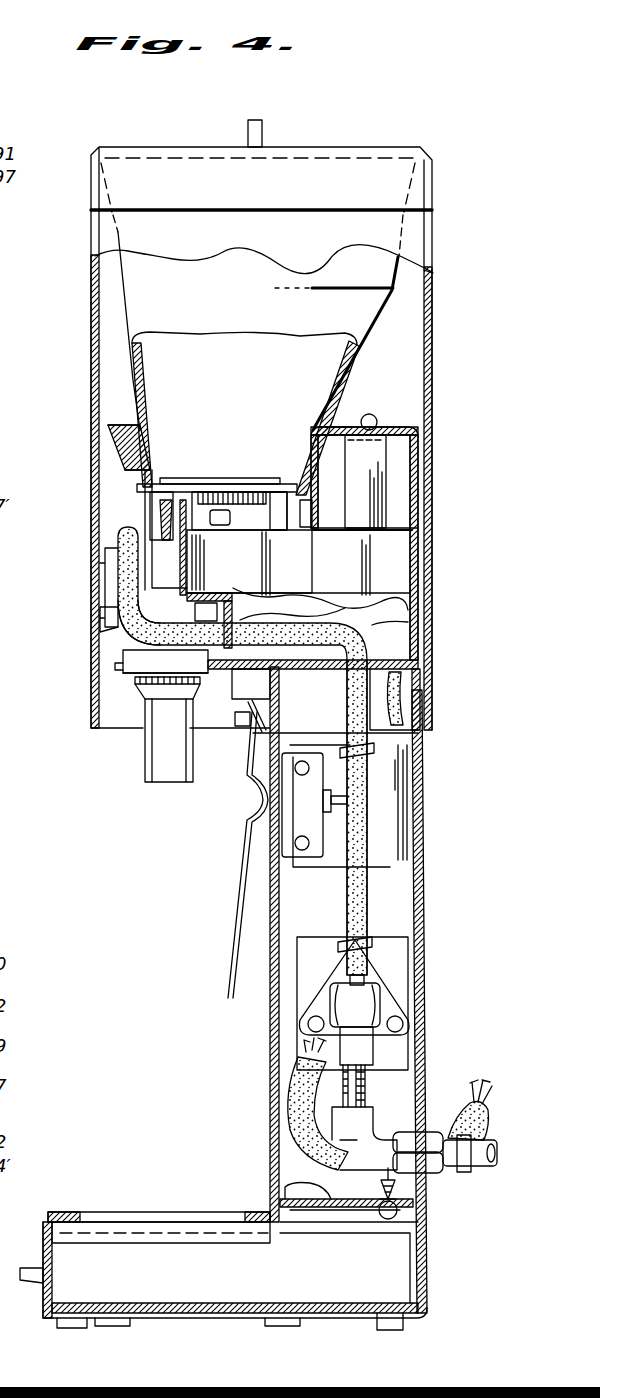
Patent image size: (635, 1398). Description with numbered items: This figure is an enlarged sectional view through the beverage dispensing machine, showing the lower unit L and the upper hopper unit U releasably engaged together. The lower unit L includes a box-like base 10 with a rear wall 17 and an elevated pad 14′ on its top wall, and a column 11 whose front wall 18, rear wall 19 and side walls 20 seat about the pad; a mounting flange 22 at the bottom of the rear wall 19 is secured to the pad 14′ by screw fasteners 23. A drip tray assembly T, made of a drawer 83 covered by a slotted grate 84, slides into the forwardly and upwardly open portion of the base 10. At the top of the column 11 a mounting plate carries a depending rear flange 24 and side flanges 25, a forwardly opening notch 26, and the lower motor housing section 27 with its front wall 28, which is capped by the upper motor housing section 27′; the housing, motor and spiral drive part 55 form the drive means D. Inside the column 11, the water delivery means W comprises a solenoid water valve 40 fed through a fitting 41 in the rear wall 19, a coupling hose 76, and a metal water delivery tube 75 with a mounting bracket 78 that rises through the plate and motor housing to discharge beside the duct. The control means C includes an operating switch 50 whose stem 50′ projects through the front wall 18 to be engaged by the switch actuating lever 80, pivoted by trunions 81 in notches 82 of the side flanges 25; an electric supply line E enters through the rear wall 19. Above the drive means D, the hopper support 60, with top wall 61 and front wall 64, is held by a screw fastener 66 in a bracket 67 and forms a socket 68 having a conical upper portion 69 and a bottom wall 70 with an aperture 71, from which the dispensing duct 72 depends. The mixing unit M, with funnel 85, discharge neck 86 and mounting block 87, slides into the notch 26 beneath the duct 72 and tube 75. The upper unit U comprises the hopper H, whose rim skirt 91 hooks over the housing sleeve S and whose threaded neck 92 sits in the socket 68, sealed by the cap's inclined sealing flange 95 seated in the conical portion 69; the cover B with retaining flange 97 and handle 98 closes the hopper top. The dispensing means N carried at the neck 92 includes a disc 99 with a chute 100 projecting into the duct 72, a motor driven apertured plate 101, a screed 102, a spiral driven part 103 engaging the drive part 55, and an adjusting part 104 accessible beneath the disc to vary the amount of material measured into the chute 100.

The base section 10 is at (290, 1322).
The column 11 is at (430, 937).
The pad 14′ is at (276, 1182).
The rear wall 17 is at (425, 1248).
The front wall 18 is at (282, 1060).
The rear wall 19 is at (426, 873).
The side walls 20 is at (298, 913).
The mounting flange 22 is at (402, 1178).
The screw fasteners 23 is at (385, 1222).
The rear flange 24 is at (426, 697).
The side flanges 25 is at (238, 718).
The notch 26 is at (416, 487).
The lower motor housing section 27 is at (392, 612).
The upper motor housing section 27′ is at (380, 556).
The front wall 28 is at (265, 600).
The solenoid operated water valve 40 is at (380, 1000).
The water conducting fitting 41 is at (377, 1112).
The operating switch 50 is at (298, 822).
The operating stem 50′ is at (275, 820).
The drive part 55 is at (235, 530).
The hopper support 60 is at (416, 450).
The top wall 61 is at (402, 430).
The front wall 64 is at (135, 478).
The screw fastener 66 is at (380, 428).
The bracket 67 is at (372, 500).
The socket 68 is at (128, 433).
The conical upper portion 69 is at (127, 448).
The bottom wall 70 is at (143, 515).
The aperture 71 is at (293, 532).
The dispensing duct 72 is at (116, 552).
The water delivery tube 75 is at (110, 583).
The coupling hose 76 is at (368, 790).
The mounting bracket 78 is at (262, 628).
The switch actuating lever 80 is at (230, 976).
The trunions 81 is at (283, 738).
The notches 82 is at (253, 765).
The drawer 83 is at (238, 1275).
The grate 84 is at (158, 1212).
The funnel 85 is at (122, 618).
The discharge neck 86 is at (145, 742).
The mounting block 87 is at (123, 660).
The rim skirt 91 is at (162, 158).
The neck 92 is at (340, 428).
The sealing flange 95 is at (132, 428).
The retaining flange 97 is at (433, 170).
The handle 98 is at (260, 120).
The mounting disc 99 is at (214, 508).
The chute 100 is at (176, 520).
The motor driven plate 101 is at (196, 495).
The screed element 102 is at (162, 492).
The driven part 103 is at (232, 492).
The adjusting part 104 is at (272, 540).
The cover B is at (362, 138).
The control means C is at (228, 919).
The drive means D is at (377, 578).
The electric power supply line E is at (298, 1128).
The hopper H is at (333, 258).
The lower unit L is at (268, 1102).
The mixing unit M is at (142, 790).
The dispensing means N is at (262, 447).
The housing sleeve S is at (90, 345).
The drip tray assembly T is at (42, 1232).
The upper hopper unit U is at (88, 296).
The water delivery means W is at (305, 1003).